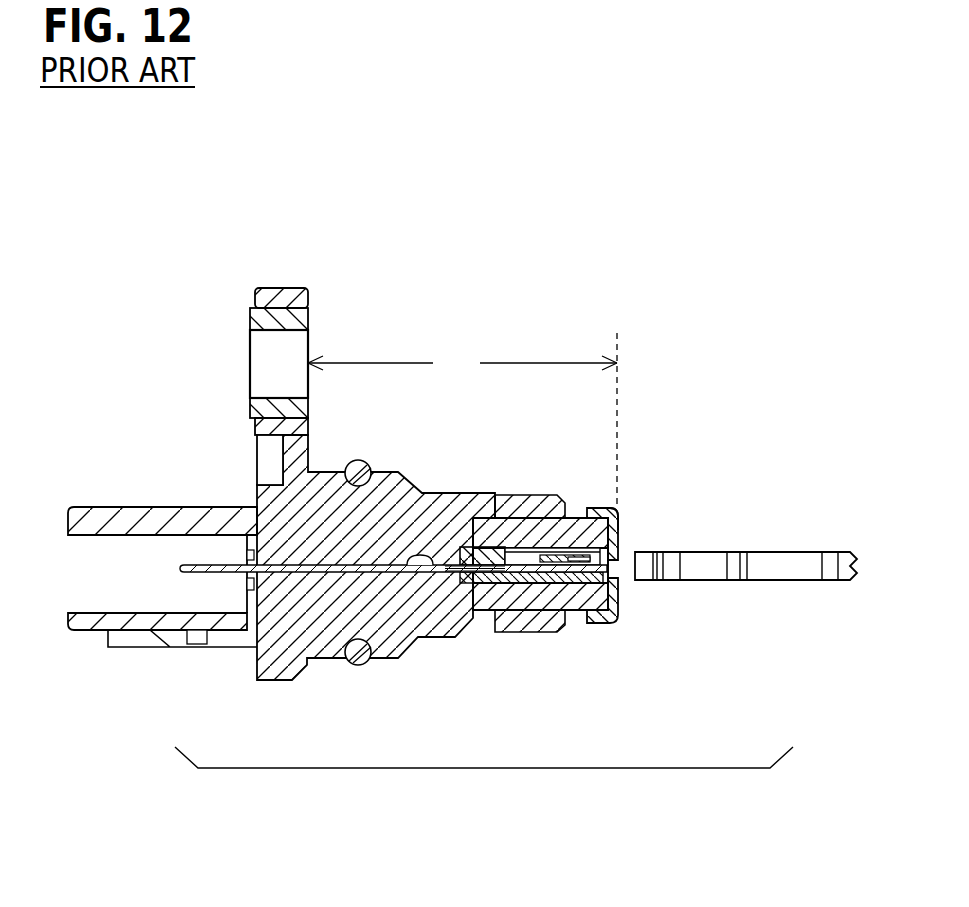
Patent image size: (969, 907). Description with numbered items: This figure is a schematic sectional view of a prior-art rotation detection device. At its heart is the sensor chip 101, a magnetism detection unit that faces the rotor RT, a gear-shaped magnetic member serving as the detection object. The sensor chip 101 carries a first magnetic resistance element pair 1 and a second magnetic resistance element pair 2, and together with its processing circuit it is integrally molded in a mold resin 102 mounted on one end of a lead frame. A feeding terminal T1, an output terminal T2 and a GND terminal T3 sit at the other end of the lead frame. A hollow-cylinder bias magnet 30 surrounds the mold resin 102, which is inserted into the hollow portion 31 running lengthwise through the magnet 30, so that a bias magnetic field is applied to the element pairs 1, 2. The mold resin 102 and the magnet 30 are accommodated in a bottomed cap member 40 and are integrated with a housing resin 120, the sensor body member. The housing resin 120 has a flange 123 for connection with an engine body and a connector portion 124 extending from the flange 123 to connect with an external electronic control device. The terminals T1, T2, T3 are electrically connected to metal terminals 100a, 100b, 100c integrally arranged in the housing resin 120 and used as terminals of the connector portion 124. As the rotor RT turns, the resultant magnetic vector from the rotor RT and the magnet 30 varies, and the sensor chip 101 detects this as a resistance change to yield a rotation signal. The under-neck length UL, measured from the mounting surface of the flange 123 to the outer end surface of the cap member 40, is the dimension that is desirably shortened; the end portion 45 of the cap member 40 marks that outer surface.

The housing resin 120 is at (418, 493).
The flange 123 is at (282, 288).
The connector portion 124 is at (98, 515).
The magnet 30 is at (537, 597).
The hollow portion 31 is at (527, 555).
The cap member 40 is at (618, 608).
The cap end 45 is at (618, 518).
The mold resin 102 is at (467, 583).
The sensor chip 101 is at (559, 545).
The magnetic resistance element pair 1 is at (602, 547).
The magnetic resistance element pair 2 is at (629, 540).
The metal terminal 100a is at (217, 573).
The metal terminal 100b is at (212, 647).
The metal terminal 100c is at (393, 635).
The feeding terminal T1 is at (452, 572).
The output terminal T2 is at (448, 641).
The GND terminal T3 is at (475, 641).
The rotor RT is at (798, 552).
The under-neck length UL is at (462, 420).